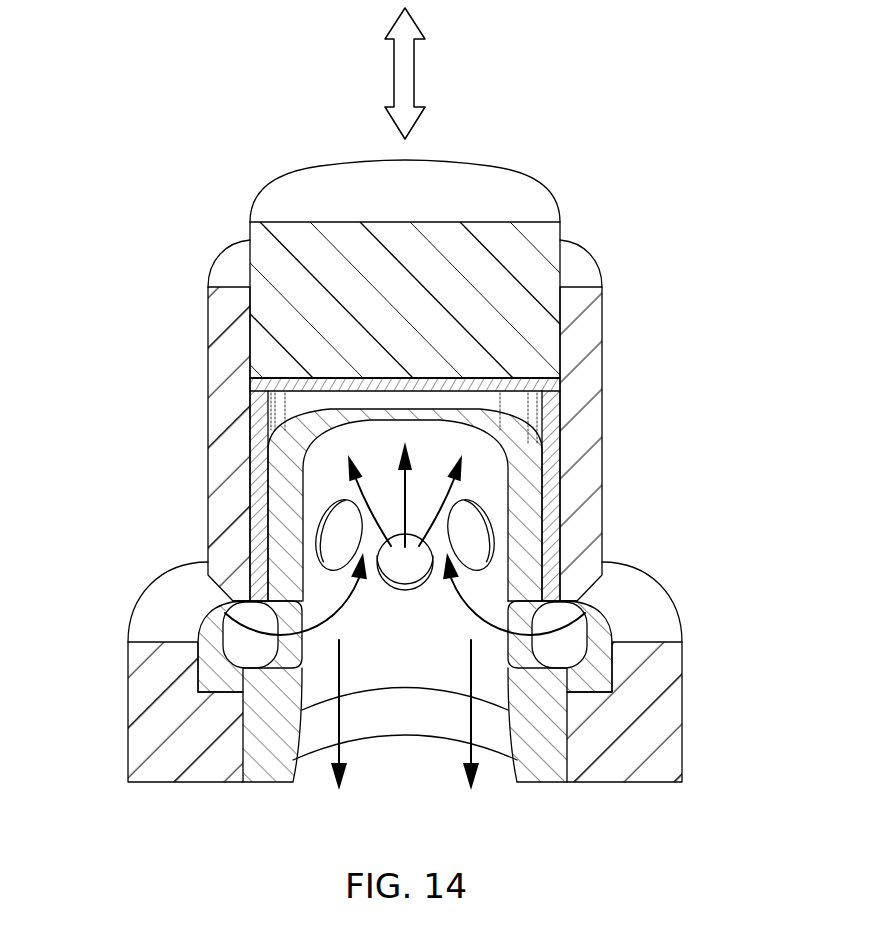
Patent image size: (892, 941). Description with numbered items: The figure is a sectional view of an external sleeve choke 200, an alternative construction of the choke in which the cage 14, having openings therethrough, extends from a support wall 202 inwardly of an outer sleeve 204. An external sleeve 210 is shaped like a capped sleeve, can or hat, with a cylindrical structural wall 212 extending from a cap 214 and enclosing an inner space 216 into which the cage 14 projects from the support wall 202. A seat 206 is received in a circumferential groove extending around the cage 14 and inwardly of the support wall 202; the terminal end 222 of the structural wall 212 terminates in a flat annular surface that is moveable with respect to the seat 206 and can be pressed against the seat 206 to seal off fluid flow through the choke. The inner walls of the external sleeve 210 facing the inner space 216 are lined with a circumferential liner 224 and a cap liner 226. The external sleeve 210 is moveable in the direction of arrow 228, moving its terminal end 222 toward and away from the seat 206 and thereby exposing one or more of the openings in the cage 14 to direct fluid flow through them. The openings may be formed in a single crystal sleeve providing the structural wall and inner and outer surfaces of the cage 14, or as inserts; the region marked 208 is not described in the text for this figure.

The cage 14 is at (308, 737).
The external sleeve choke 200 is at (417, 421).
The support wall 202 is at (658, 712).
The outer sleeve 204 is at (413, 420).
The seat 206 is at (600, 630).
The flange 208 is at (600, 606).
The external sleeve 210 is at (218, 400).
The structural wall 212 is at (603, 427).
The cap 214 is at (530, 337).
The inner space 216 is at (297, 414).
The terminal end 222 is at (243, 662).
The circumferential liner 224 is at (552, 408).
The cap liner 226 is at (287, 378).
The arrow 228 is at (415, 75).